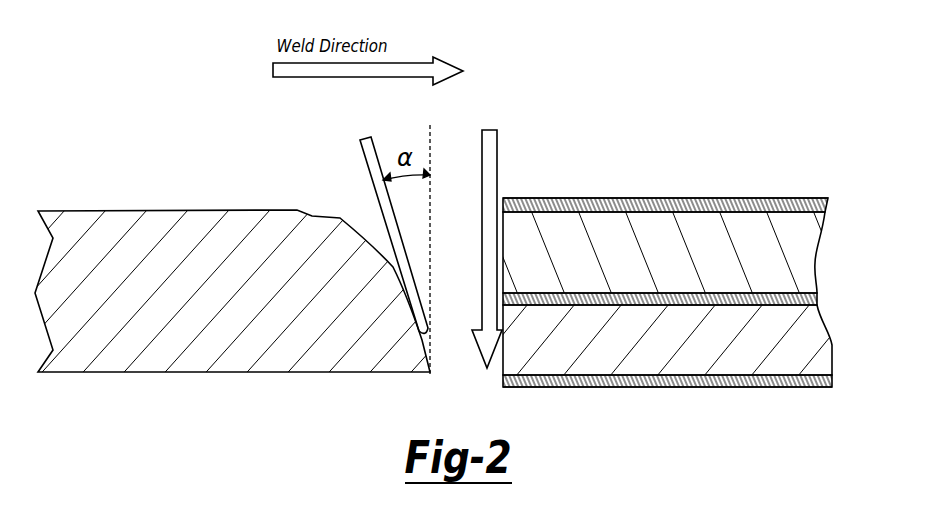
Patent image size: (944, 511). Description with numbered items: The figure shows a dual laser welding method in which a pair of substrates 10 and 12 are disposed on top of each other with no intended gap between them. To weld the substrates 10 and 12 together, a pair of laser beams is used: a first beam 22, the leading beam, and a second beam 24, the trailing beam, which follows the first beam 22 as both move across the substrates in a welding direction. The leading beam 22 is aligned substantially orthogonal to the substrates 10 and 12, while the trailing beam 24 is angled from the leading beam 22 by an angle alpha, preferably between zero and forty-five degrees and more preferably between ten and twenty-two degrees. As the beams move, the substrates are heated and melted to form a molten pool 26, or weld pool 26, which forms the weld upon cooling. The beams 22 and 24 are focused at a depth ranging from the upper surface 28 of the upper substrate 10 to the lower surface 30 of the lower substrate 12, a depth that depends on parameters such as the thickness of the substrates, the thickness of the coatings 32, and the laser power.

The upper substrate 10 is at (812, 263).
The lower substrate 12 is at (822, 345).
The first beam 22 is at (498, 160).
The second beam 24 is at (362, 164).
The molten pool 26 is at (116, 219).
The upper surface 28 is at (596, 199).
The lower surface 30 is at (581, 389).
The coatings 32 is at (830, 206).